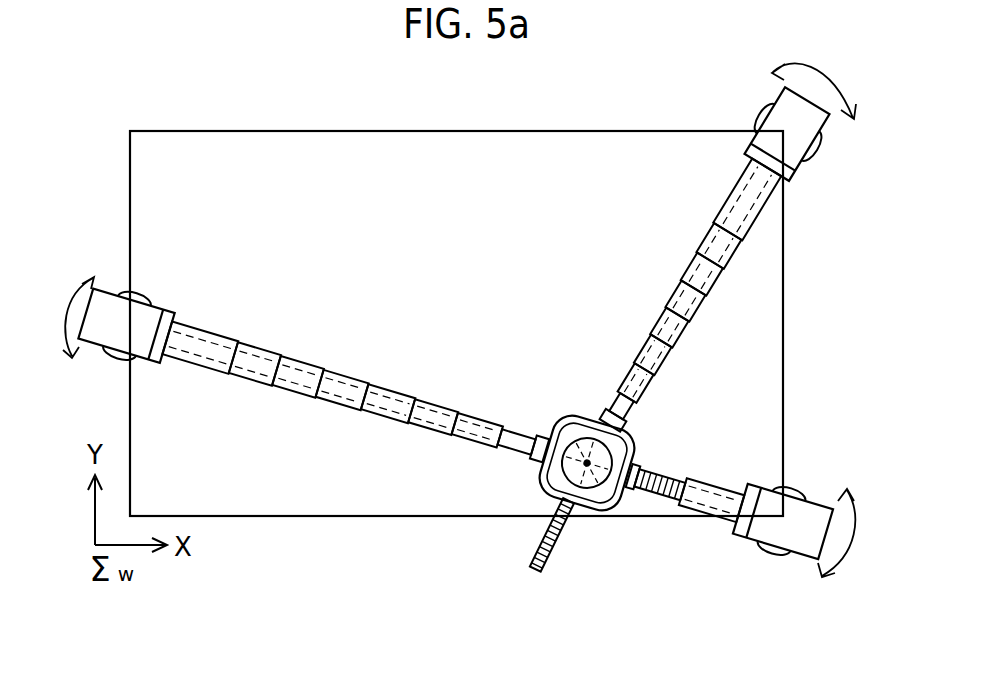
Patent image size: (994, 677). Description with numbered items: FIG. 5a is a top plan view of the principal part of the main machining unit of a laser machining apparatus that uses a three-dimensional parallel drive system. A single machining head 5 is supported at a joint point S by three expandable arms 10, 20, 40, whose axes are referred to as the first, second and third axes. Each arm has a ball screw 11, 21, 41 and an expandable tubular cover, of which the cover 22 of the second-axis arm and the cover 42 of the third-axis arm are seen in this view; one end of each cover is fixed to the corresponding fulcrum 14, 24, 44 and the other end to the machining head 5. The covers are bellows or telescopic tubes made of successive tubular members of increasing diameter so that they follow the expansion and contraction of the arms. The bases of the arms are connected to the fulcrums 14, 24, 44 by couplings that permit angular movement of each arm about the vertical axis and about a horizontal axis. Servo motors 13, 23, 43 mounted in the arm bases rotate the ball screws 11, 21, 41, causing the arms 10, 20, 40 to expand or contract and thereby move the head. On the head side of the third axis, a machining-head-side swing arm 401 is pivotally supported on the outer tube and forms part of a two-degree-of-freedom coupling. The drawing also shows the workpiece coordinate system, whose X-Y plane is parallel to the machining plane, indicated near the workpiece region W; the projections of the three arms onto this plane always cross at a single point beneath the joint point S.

The machining head 5 is at (545, 480).
The expandable arm 10 is at (734, 512).
The ball screw 11 is at (695, 478).
The servo motor 13 is at (787, 507).
The fulcrum 14 is at (750, 557).
The expandable arm 20 is at (306, 338).
The ball screw 21 is at (252, 372).
The cover 22 is at (313, 373).
The servo motor 23 is at (117, 315).
The fulcrum 24 is at (110, 376).
The expandable arm 40 is at (725, 247).
The ball screw 41 is at (705, 277).
The cover 42 is at (757, 228).
The servo motor 43 is at (775, 128).
The fulcrum 44 is at (816, 175).
The machining-head-side swing arm 401 is at (590, 426).
The joint point S is at (572, 425).
The work coordinate frame W is at (465, 180).